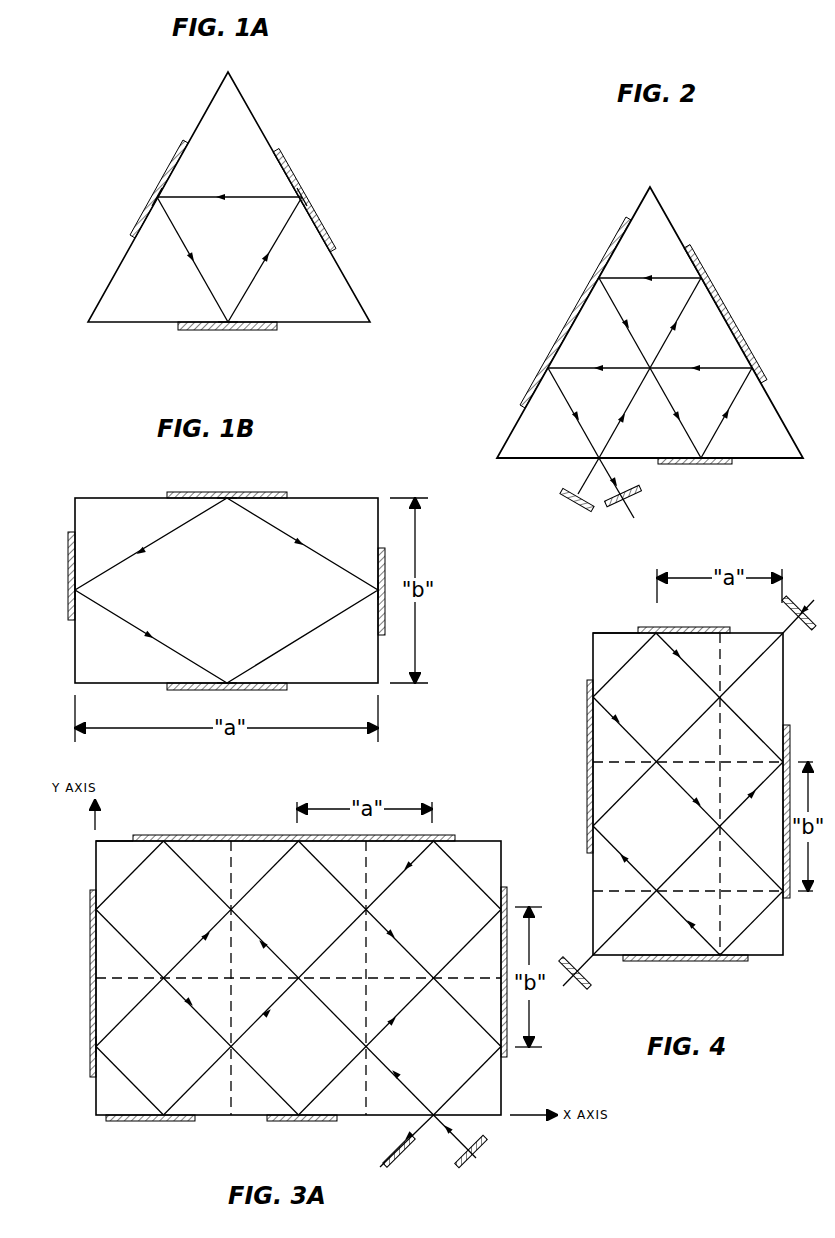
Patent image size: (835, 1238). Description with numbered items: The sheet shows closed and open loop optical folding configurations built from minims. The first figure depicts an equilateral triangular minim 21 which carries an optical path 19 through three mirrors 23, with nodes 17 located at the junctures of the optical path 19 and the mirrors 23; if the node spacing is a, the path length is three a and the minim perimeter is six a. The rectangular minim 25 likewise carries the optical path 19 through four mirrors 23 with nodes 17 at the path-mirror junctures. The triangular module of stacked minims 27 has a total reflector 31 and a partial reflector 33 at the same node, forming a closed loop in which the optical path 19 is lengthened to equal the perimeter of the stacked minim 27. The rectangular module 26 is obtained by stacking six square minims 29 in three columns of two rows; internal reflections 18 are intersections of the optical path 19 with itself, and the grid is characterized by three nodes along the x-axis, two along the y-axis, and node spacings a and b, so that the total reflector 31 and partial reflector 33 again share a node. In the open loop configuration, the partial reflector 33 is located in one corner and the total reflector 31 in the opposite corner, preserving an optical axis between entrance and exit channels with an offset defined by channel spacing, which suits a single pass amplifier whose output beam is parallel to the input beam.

In FIG. 1A, the nodes 17 is at (303, 195).
In FIG. 1B, the nodes 17 is at (228, 498).
In FIG. 3A, the nodes 17 is at (96, 1047).
In FIG. 4, the internal reflections 18 is at (723, 683).
In FIG. 3A, the internal reflections 18 is at (297, 998).
In FIG. 1A, the optical path 19 is at (286, 227).
In FIG. 1B, the optical path 19 is at (140, 545).
In FIG. 2, the optical path 19 is at (720, 362).
In FIG. 4, the optical path 19 is at (594, 958).
In FIG. 3A, the optical path 19 is at (477, 1076).
In FIG. 1A, the minim 21 is at (243, 132).
In FIG. 1A, the mirrors 23 is at (163, 180).
In FIG. 1B, the mirrors 23 is at (192, 492).
In FIG. 2, the mirrors 23 is at (733, 307).
In FIG. 4, the mirrors 23 is at (640, 629).
In FIG. 3A, the mirrors 23 is at (195, 836).
In FIG. 1B, the minim 25 is at (338, 518).
In FIG. 4, the module 26 is at (585, 631).
In FIG. 3A, the module 26 is at (118, 838).
In FIG. 2, the stacked minims 27 is at (677, 216).
In FIG. 4, the square minims 29 is at (613, 667).
In FIG. 3A, the square minims 29 is at (112, 868).
In FIG. 2, the total reflector 31 is at (640, 512).
In FIG. 4, the total reflector 31 is at (588, 990).
In FIG. 3A, the total reflector 31 is at (472, 1155).
In FIG. 2, the partial reflector 33 is at (588, 512).
In FIG. 4, the partial reflector 33 is at (789, 592).
In FIG. 3A, the partial reflector 33 is at (415, 1162).